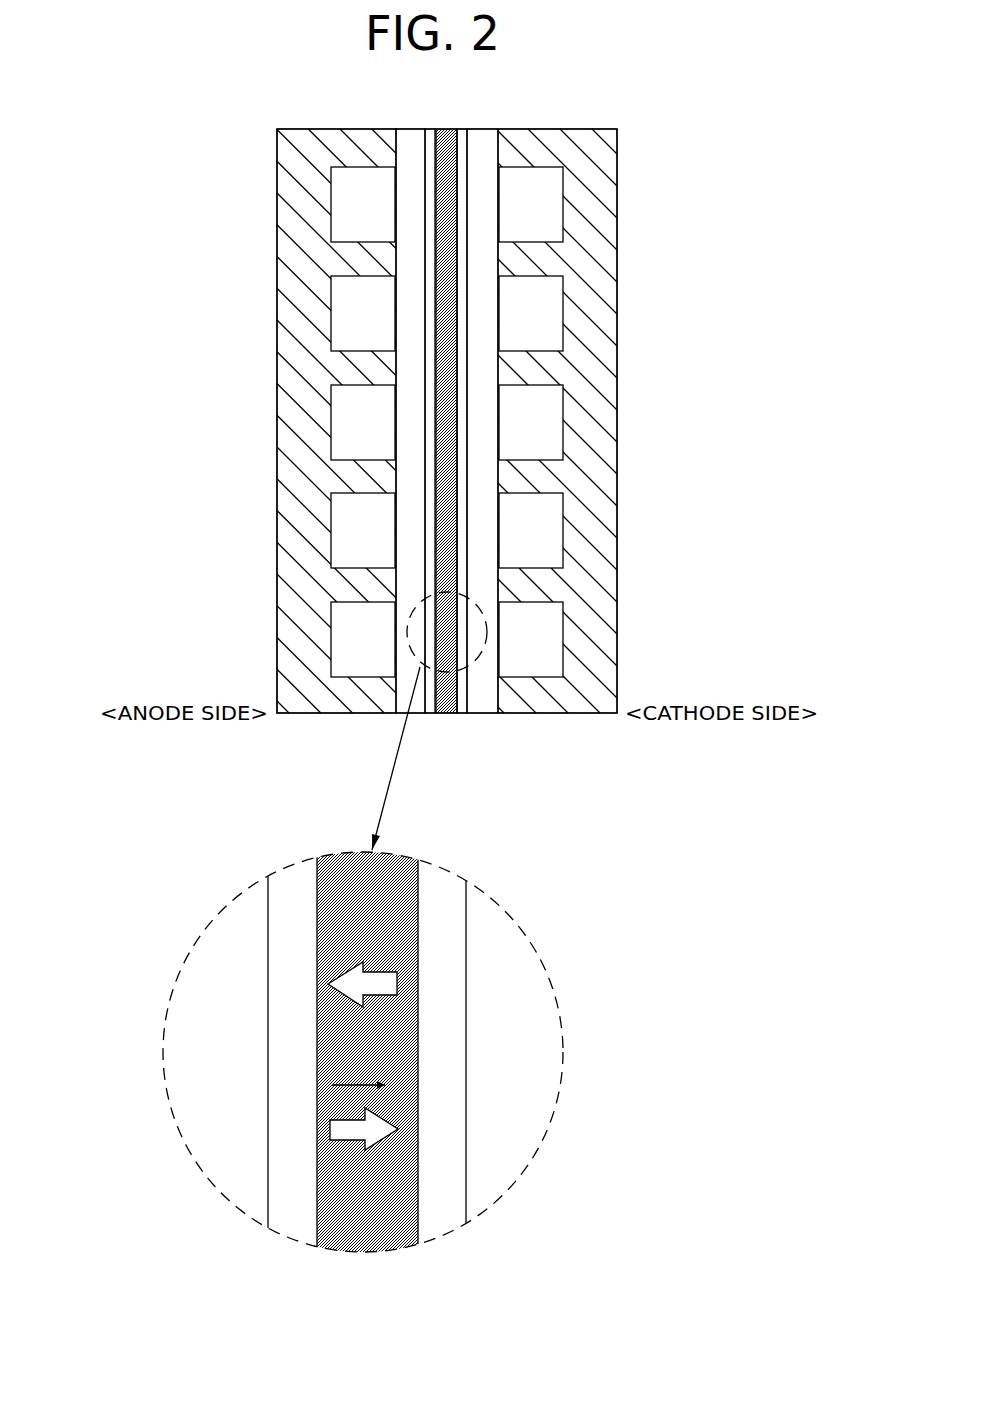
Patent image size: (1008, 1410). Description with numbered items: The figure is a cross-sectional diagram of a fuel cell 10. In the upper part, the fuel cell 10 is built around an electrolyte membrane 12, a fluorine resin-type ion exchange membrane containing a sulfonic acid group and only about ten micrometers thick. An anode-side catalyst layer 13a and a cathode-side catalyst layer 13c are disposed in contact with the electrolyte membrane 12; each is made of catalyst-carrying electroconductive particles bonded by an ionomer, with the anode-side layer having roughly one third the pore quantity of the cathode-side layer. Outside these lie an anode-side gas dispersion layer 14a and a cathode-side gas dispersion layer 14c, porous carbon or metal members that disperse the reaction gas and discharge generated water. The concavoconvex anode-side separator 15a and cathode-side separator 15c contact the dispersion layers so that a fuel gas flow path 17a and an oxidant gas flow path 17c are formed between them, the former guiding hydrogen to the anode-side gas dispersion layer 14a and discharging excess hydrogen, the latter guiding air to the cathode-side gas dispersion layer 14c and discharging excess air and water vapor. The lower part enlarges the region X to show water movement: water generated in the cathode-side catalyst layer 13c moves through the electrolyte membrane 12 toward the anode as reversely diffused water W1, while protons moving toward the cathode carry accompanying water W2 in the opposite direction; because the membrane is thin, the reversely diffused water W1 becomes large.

The fuel cell 10 is at (670, 131).
The electrolyte membrane 12 is at (447, 127).
The anode-side catalyst layer 13a is at (431, 125).
The cathode-side catalyst layer 13c is at (462, 125).
The anode-side gas dispersion layer 14a is at (412, 128).
The cathode-side gas dispersion layer 14c is at (496, 128).
The anode-side separator 15a is at (335, 130).
The cathode-side separator 15c is at (566, 128).
The fuel gas flow path 17a is at (338, 205).
The oxidant gas flow path 17c is at (556, 205).
The reversely diffused water W1 is at (385, 973).
The accompanying water W2 is at (343, 1143).
The region X is at (385, 691).